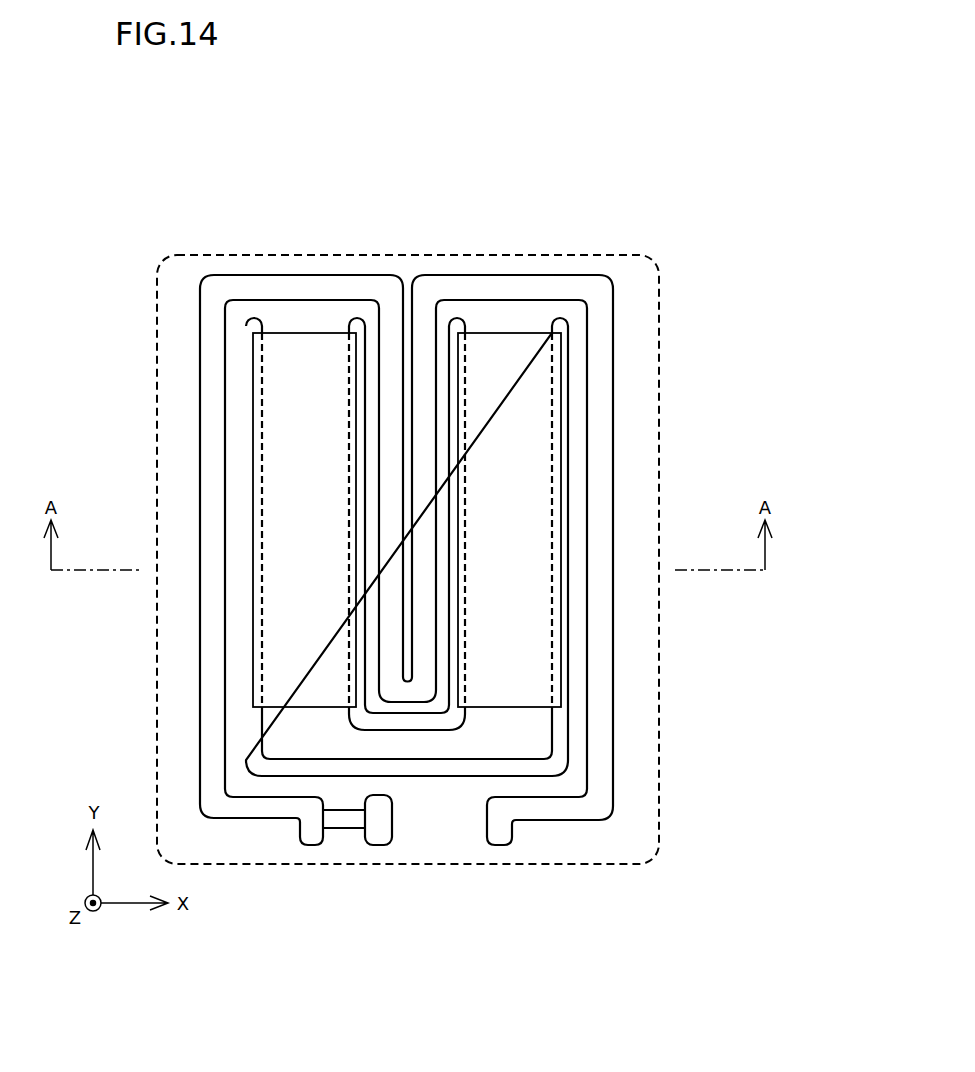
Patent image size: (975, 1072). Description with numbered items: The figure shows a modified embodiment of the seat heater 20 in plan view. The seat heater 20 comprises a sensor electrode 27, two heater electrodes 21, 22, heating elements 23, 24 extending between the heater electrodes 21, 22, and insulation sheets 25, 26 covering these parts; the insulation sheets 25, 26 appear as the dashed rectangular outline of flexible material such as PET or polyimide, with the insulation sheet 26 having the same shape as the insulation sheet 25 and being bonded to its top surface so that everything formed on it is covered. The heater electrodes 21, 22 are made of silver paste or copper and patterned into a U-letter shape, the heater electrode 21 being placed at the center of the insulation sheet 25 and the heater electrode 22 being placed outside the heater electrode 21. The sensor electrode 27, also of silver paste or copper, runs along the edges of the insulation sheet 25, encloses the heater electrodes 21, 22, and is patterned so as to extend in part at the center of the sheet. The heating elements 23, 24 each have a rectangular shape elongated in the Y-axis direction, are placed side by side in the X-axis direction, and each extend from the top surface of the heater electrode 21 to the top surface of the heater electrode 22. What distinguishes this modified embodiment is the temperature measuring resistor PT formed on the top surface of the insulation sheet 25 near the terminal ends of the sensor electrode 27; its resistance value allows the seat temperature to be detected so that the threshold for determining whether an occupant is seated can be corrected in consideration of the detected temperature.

The seat heater 20 is at (636, 221).
The heater electrode 21 is at (465, 718).
The heater electrode 22 is at (450, 777).
The heating element 23 is at (300, 333).
The heating element 24 is at (510, 333).
The insulation sheet 25 is at (659, 350).
The insulation sheet 26 is at (472, 559).
The sensor electrode 27 is at (613, 745).
The temperature measuring resistor PT is at (344, 830).